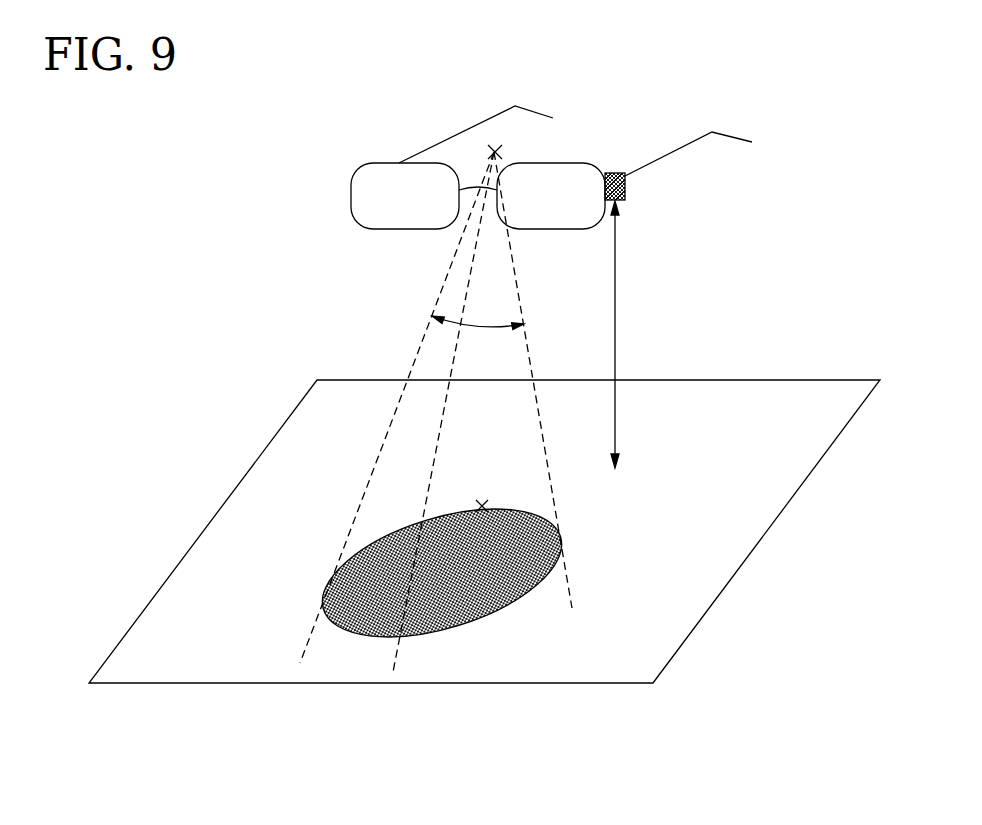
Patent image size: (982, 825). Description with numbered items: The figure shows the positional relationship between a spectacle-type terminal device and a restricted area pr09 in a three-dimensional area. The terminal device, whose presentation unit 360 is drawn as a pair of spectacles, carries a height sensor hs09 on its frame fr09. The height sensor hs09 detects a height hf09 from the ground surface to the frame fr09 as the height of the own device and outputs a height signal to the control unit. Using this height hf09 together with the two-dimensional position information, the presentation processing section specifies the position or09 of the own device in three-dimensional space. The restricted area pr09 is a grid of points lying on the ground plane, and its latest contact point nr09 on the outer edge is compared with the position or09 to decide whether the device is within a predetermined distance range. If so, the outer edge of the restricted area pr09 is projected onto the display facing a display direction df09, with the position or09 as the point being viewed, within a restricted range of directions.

The presentation unit 360 is at (362, 198).
The height sensor hs09 is at (613, 172).
The position of the own device or09 is at (528, 146).
The frame fr09 is at (665, 158).
The height hf09 is at (648, 334).
The latest contact point nr09 is at (492, 487).
The restricted area pr09 is at (498, 613).
The display direction df09 is at (484, 552).